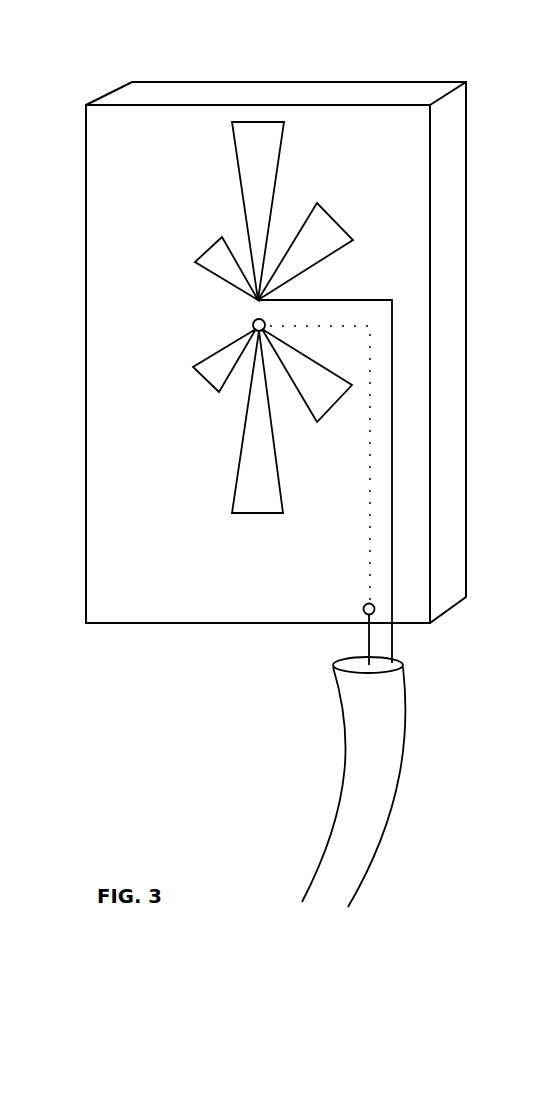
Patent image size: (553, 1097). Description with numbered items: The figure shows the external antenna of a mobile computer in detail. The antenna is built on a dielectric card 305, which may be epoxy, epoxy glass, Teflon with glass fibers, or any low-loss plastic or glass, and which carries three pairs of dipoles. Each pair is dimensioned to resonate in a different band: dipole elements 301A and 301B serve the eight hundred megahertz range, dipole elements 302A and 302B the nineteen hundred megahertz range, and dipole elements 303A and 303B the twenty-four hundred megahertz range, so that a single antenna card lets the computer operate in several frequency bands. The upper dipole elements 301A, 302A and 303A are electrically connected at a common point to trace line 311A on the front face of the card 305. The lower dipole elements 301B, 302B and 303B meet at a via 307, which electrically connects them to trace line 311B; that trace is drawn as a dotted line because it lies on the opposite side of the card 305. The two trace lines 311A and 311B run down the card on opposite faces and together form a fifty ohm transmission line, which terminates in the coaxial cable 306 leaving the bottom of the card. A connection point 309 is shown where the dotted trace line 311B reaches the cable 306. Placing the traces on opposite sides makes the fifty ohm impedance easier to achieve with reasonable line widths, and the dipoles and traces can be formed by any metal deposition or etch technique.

The dielectric card 305 is at (368, 90).
The dipole element 301A is at (290, 211).
The dipole element 302A is at (333, 251).
The dipole element 303A is at (200, 260).
The dipole element 301B is at (255, 441).
The dipole element 302B is at (308, 393).
The dipole element 303B is at (199, 372).
The via 307 is at (253, 322).
The feed connection point 309 is at (364, 609).
The trace line 311A is at (367, 294).
The trace line 311B is at (370, 403).
The coaxial cable 306 is at (382, 755).